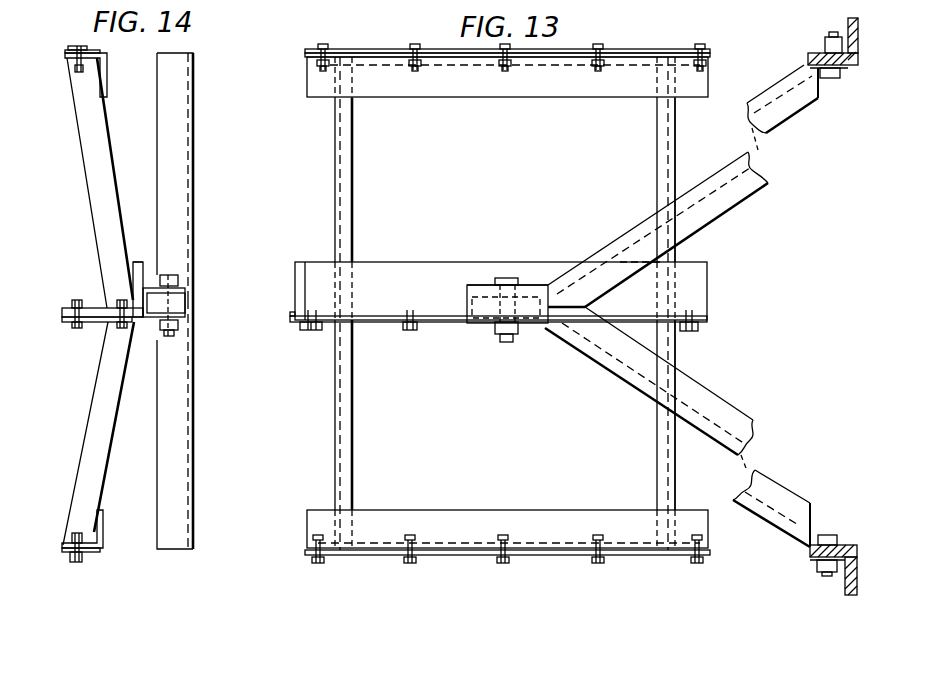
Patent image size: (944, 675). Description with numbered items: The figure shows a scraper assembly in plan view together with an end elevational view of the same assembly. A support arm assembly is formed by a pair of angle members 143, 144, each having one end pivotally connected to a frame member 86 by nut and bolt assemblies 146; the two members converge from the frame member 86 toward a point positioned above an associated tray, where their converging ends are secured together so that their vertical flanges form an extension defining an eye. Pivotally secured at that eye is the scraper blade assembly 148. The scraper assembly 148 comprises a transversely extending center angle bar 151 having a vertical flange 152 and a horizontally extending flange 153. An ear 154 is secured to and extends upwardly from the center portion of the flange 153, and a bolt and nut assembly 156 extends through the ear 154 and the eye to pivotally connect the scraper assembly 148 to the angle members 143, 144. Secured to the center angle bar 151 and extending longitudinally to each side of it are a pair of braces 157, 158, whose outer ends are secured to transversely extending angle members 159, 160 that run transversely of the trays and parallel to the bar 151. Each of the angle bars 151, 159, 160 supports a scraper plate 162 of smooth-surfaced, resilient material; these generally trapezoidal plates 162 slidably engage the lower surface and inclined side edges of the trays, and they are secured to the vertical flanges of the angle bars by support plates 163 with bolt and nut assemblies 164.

In FIG. 13, the frame member 86 is at (845, 591).
In FIG. 14, the angle member 143 is at (195, 171).
In FIG. 13, the angle member 143 is at (790, 120).
In FIG. 14, the angle member 144 is at (195, 405).
In FIG. 13, the angle member 144 is at (772, 483).
In FIG. 13, the nut and bolt assembly 146 is at (822, 572).
In FIG. 14, the scraper blade assembly 148 is at (83, 301).
In FIG. 14, the center angle bar 151 is at (139, 255).
In FIG. 13, the center angle bar 151 is at (712, 288).
In FIG. 14, the vertical flange 152 is at (97, 310).
In FIG. 14, the horizontally extending flange 153 is at (143, 272).
In FIG. 13, the horizontally extending flange 153 is at (432, 268).
In FIG. 14, the ear 154 is at (182, 305).
In FIG. 13, the ear 154 is at (470, 297).
In FIG. 14, the bolt and nut assembly 156 is at (180, 331).
In FIG. 13, the bolt and nut assembly 156 is at (494, 343).
In FIG. 14, the brace 157 is at (92, 178).
In FIG. 13, the brace 157 is at (352, 162).
In FIG. 13, the brace 158 is at (658, 143).
In FIG. 14, the transversely extending angle member 159 is at (105, 79).
In FIG. 13, the transversely extending angle member 159 is at (485, 88).
In FIG. 14, the transversely extending angle member 160 is at (104, 525).
In FIG. 13, the transversely extending angle member 160 is at (503, 517).
In FIG. 14, the scraper plate 162 is at (67, 52).
In FIG. 13, the scraper plate 162 is at (527, 55).
In FIG. 14, the support plate 163 is at (100, 52).
In FIG. 13, the support plate 163 is at (388, 52).
In FIG. 14, the bolt and nut assembly 164 is at (78, 47).
In FIG. 13, the bolt and nut assembly 164 is at (700, 47).